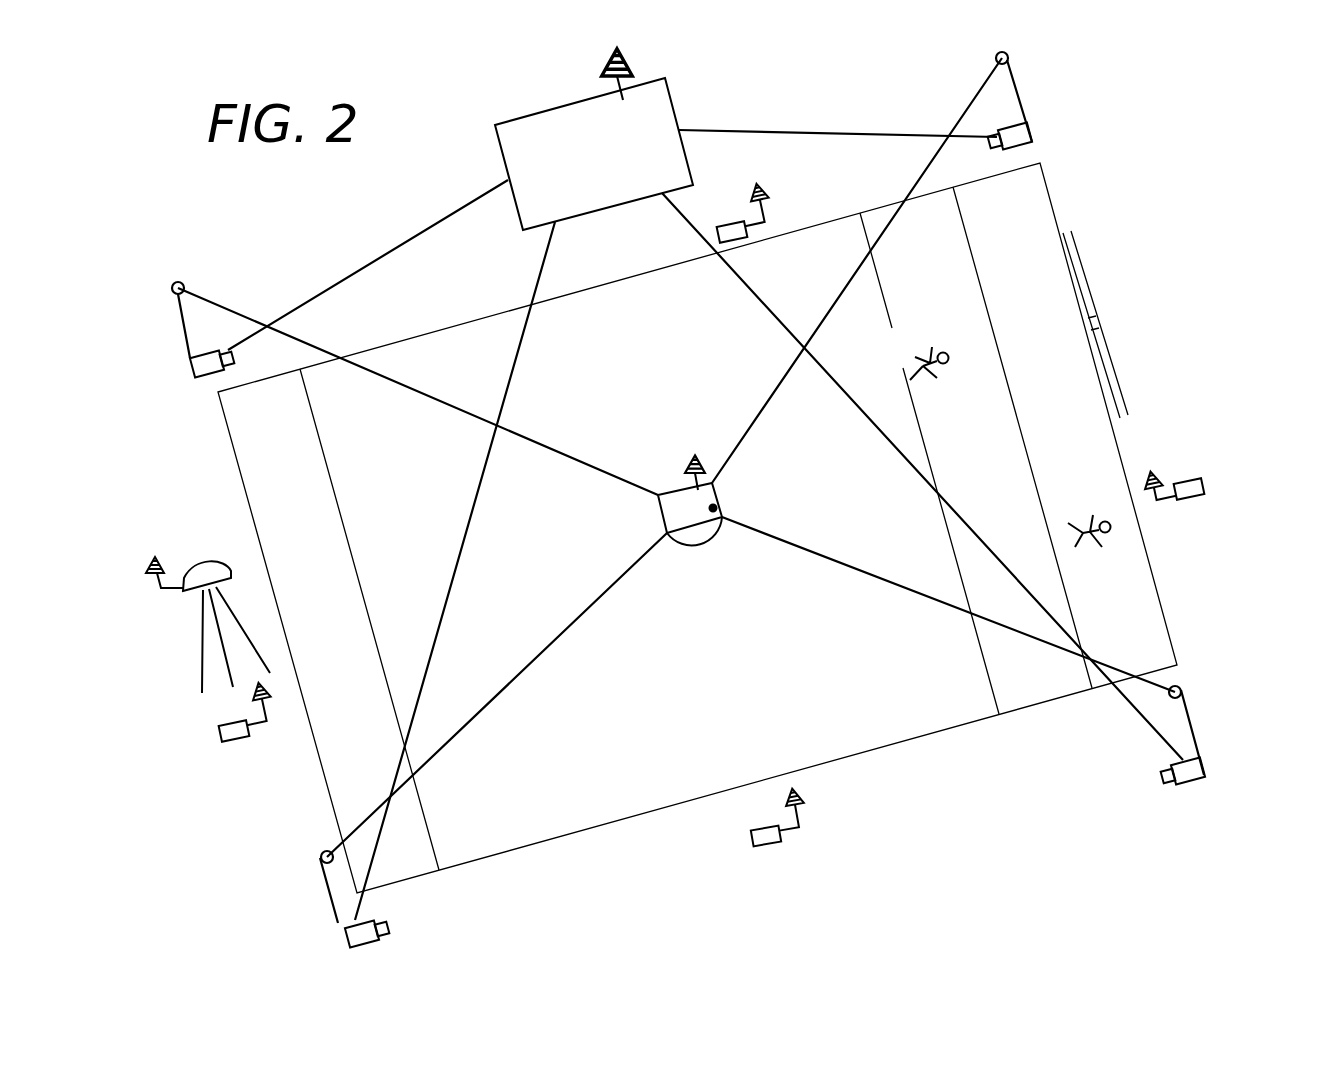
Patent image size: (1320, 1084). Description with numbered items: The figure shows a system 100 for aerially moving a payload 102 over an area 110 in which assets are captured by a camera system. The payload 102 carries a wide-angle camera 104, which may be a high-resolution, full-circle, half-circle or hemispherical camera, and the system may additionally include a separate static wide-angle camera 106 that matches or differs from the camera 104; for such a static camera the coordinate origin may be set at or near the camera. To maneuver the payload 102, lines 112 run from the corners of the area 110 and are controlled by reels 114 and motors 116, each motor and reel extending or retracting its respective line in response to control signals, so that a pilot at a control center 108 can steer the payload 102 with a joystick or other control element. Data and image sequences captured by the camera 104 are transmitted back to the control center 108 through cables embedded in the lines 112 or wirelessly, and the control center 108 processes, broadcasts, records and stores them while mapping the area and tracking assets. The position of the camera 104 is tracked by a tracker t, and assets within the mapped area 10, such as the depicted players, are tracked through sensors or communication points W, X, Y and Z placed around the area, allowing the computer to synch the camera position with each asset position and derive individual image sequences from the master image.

The system 100 is at (1133, 200).
The payload 102 is at (678, 507).
The wide-angle camera 104 is at (688, 545).
The wide-angle camera 106 is at (195, 562).
The control center 108 is at (538, 145).
The area 110 is at (875, 680).
The lines 112 is at (957, 112).
The reels 114 is at (218, 347).
The motors 116 is at (237, 357).
The mapped area 10 is at (915, 357).
The sensor or communication point X is at (752, 840).
The sensor or communication point Y is at (220, 732).
The sensor or communication point Z is at (728, 224).
The sensor or communication point W is at (1186, 481).
The tracker t is at (713, 508).